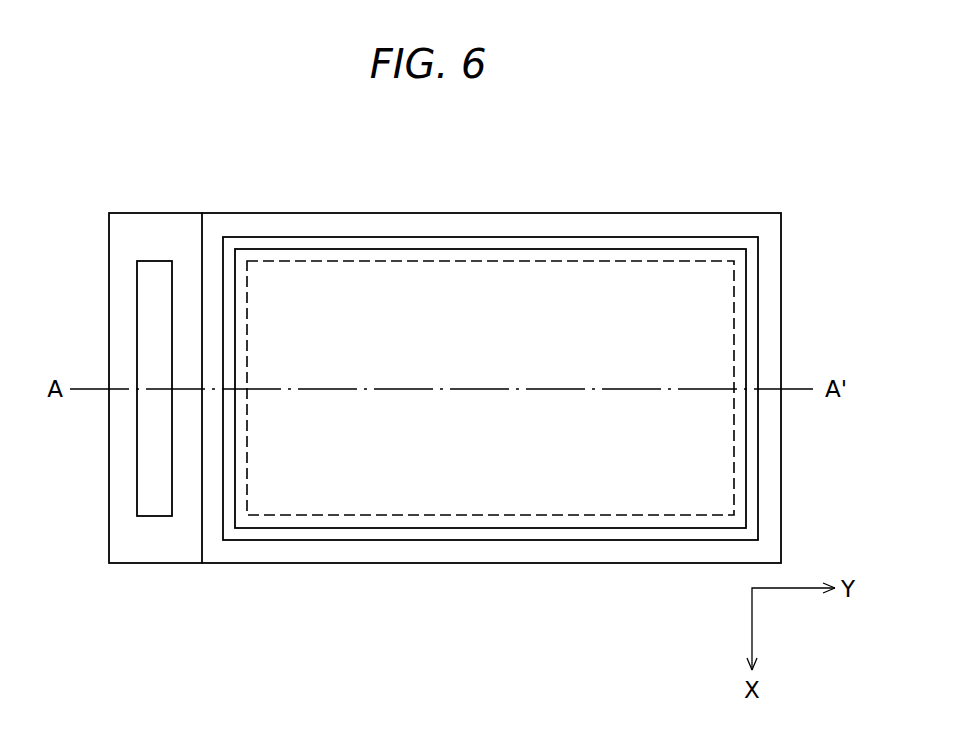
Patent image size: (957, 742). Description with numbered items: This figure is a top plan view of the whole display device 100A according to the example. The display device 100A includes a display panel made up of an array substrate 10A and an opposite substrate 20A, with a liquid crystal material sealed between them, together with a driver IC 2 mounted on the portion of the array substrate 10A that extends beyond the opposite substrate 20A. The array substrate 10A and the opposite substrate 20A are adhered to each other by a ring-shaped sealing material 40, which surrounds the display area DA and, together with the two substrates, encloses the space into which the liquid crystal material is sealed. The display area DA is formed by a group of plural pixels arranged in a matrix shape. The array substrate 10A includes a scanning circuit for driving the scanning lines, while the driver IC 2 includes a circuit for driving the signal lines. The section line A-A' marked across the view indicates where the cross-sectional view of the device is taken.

The display device 100A is at (477, 156).
The array substrate 10A is at (155, 228).
The driver IC 2 is at (156, 501).
The opposite substrate 20A is at (577, 226).
The sealing material 40 is at (595, 540).
The display area DA is at (456, 516).